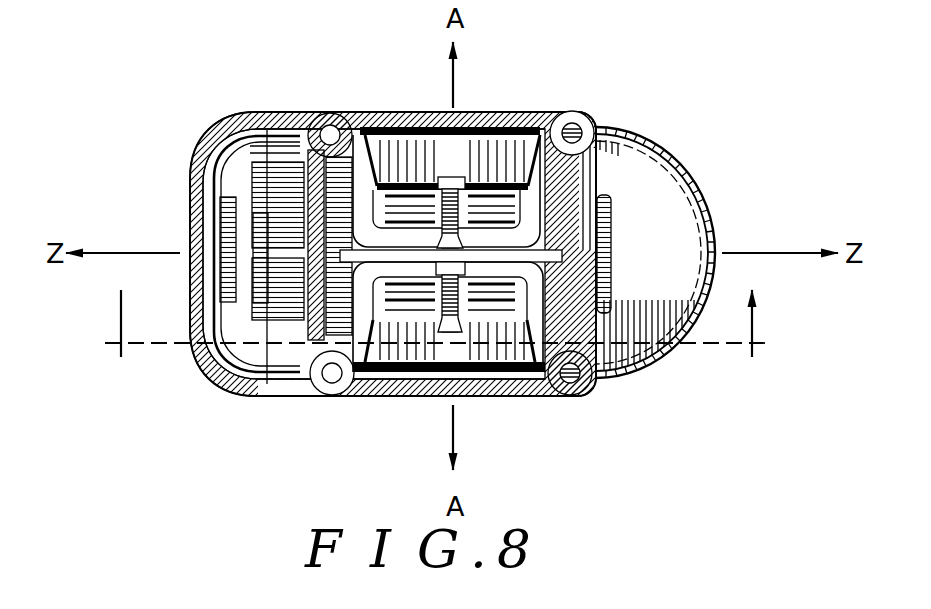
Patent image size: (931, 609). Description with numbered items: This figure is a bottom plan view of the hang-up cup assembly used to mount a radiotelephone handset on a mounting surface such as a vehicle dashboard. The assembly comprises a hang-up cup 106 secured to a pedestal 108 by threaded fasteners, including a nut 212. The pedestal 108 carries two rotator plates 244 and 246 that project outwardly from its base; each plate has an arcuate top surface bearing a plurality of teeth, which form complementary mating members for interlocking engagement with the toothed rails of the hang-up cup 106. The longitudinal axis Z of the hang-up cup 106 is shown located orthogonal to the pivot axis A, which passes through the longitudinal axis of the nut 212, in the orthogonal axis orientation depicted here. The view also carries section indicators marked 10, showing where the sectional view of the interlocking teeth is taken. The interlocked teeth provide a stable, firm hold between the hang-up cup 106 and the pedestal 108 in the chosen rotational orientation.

The pedestal 108 is at (588, 106).
The hang-up cup 106 is at (712, 182).
The rotator plate 244 is at (482, 150).
The nut 212 is at (460, 332).
The rotator plate 246 is at (527, 392).
The direction of viewing 10 is at (439, 318).